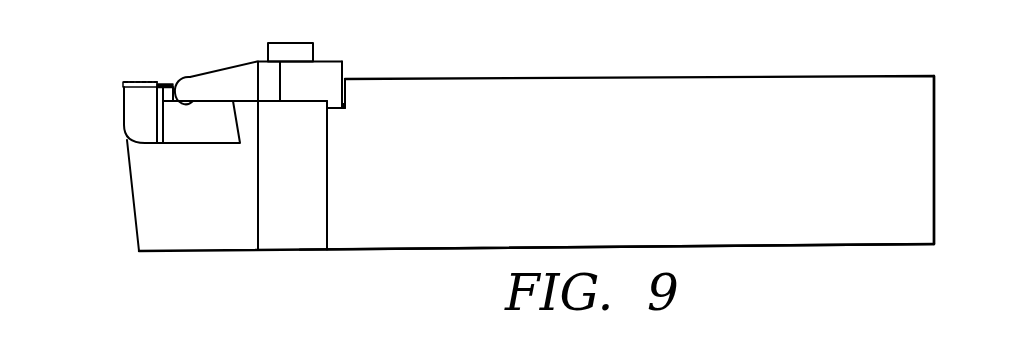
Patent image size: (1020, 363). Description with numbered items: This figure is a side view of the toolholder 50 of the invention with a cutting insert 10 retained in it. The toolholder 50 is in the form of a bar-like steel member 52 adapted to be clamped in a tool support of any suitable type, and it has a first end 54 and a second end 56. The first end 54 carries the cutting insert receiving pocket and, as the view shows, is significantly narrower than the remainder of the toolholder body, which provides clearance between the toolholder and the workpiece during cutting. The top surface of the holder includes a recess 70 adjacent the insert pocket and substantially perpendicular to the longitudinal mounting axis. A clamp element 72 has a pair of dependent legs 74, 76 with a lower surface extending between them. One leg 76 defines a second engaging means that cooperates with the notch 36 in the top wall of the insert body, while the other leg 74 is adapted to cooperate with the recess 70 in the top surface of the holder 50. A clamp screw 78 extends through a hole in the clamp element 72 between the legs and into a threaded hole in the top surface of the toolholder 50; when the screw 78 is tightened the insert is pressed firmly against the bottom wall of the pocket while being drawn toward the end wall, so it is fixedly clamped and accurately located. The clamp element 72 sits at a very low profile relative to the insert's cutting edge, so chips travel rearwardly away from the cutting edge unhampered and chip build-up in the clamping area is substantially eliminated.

The cutting insert 10 is at (135, 80).
The notch 36 is at (179, 106).
The toolholder 50 is at (800, 77).
The bar-like steel member 52 is at (773, 217).
The first end 54 is at (136, 230).
The second end 56 is at (937, 227).
The recess 70 is at (334, 109).
The clamp element 72 is at (286, 56).
The leg 74 is at (335, 80).
The leg 76 is at (192, 90).
The clamp screw 78 is at (290, 43).